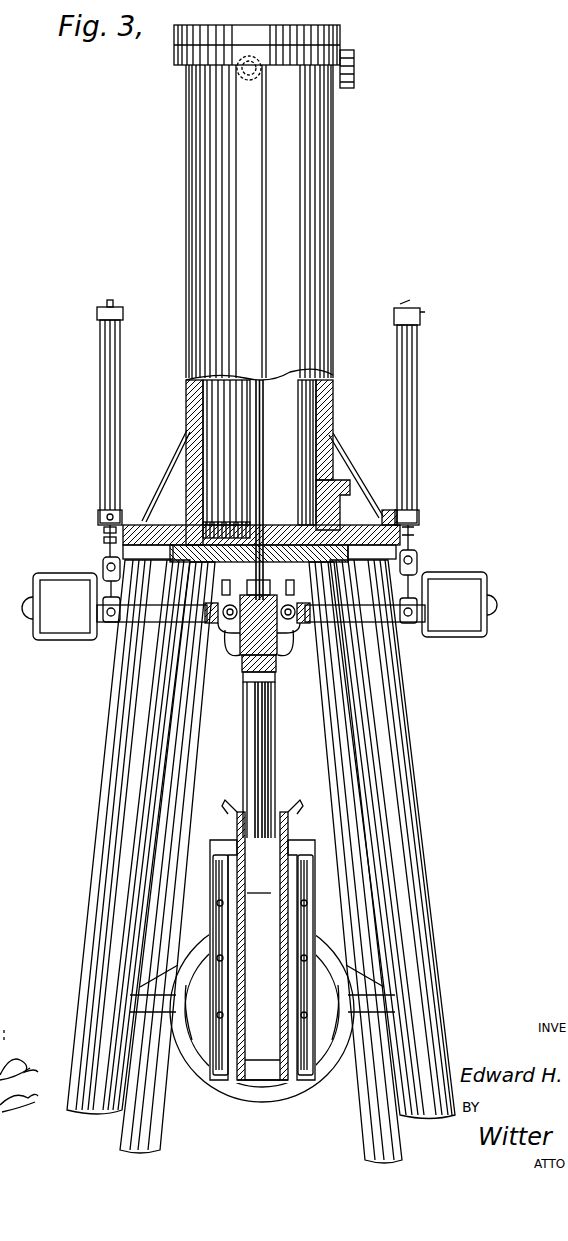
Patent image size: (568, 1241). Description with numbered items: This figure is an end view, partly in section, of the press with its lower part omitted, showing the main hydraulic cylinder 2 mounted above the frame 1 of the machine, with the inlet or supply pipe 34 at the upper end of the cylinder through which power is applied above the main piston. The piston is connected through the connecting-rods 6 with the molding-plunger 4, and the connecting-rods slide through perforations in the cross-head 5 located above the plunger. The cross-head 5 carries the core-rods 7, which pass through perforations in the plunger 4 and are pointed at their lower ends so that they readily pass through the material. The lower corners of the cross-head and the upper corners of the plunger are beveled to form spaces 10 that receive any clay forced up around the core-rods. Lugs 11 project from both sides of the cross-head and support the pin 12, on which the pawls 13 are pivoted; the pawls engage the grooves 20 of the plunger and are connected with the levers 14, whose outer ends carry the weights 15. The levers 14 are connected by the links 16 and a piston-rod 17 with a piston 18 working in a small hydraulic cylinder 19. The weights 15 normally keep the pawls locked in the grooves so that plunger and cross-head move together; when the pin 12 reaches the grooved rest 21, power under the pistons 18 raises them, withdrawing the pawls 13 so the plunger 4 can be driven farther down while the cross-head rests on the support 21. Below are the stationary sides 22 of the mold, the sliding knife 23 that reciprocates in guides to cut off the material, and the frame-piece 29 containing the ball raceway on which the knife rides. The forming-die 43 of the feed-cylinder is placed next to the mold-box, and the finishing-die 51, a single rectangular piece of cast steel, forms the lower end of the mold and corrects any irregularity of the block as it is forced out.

The frame 1 is at (100, 849).
The main hydraulic cylinder 2 is at (335, 252).
The molding-plunger 4 is at (243, 686).
The cross-head 5 is at (282, 600).
The connecting-rods 6 is at (263, 420).
The core-rods 7 is at (265, 736).
The spaces 10 is at (240, 632).
The lugs 11 is at (227, 605).
The pin 12 is at (234, 604).
The pawls 13 is at (228, 655).
The levers 14 is at (110, 625).
The weights 15 is at (259, 606).
The links 16 is at (103, 571).
The piston-rod 17 is at (104, 540).
The piston 18 is at (420, 318).
The small hydraulic cylinder 19 is at (100, 452).
The grooves 20 is at (243, 670).
The grooved rest 21 is at (224, 812).
The stationary sides of the mold 22 is at (244, 925).
The sliding knife 23 is at (275, 884).
The frame-piece 29 is at (212, 897).
The inlet or supply pipe 34 is at (356, 79).
The forming-die 43 is at (325, 978).
The finishing-die 51 is at (290, 1080).